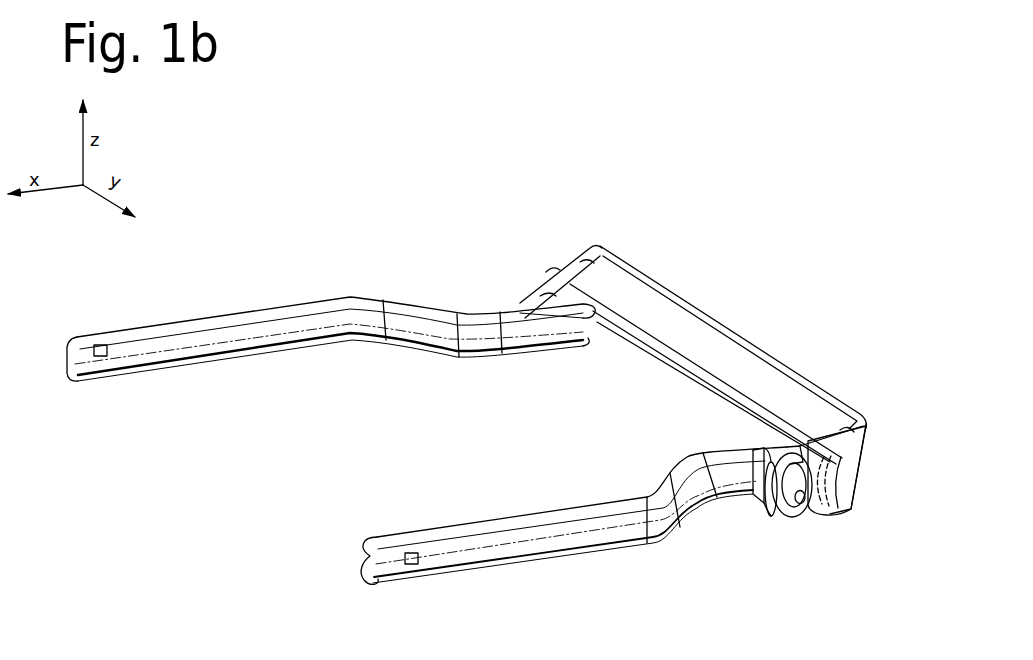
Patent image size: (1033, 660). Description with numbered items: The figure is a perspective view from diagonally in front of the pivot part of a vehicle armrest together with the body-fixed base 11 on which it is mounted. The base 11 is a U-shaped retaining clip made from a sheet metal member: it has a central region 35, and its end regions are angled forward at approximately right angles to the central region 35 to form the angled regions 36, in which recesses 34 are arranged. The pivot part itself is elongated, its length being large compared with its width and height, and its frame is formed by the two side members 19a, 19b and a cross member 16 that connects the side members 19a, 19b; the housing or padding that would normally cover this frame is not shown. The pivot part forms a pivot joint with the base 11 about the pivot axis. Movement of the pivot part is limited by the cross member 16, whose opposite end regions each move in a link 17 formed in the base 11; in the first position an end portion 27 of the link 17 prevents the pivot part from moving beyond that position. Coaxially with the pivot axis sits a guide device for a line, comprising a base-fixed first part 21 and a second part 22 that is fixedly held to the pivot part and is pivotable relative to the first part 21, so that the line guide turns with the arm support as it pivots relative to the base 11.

The base 11 is at (662, 287).
The cross member 16 is at (700, 372).
The link 17 is at (853, 489).
The side member 19a is at (214, 317).
The side member 19b is at (432, 528).
The first part 21 is at (783, 517).
The second part 22 is at (768, 503).
The end portion 27 is at (852, 464).
The recess 34 is at (805, 508).
The central region 35 is at (729, 341).
The angled region 36 is at (546, 297).